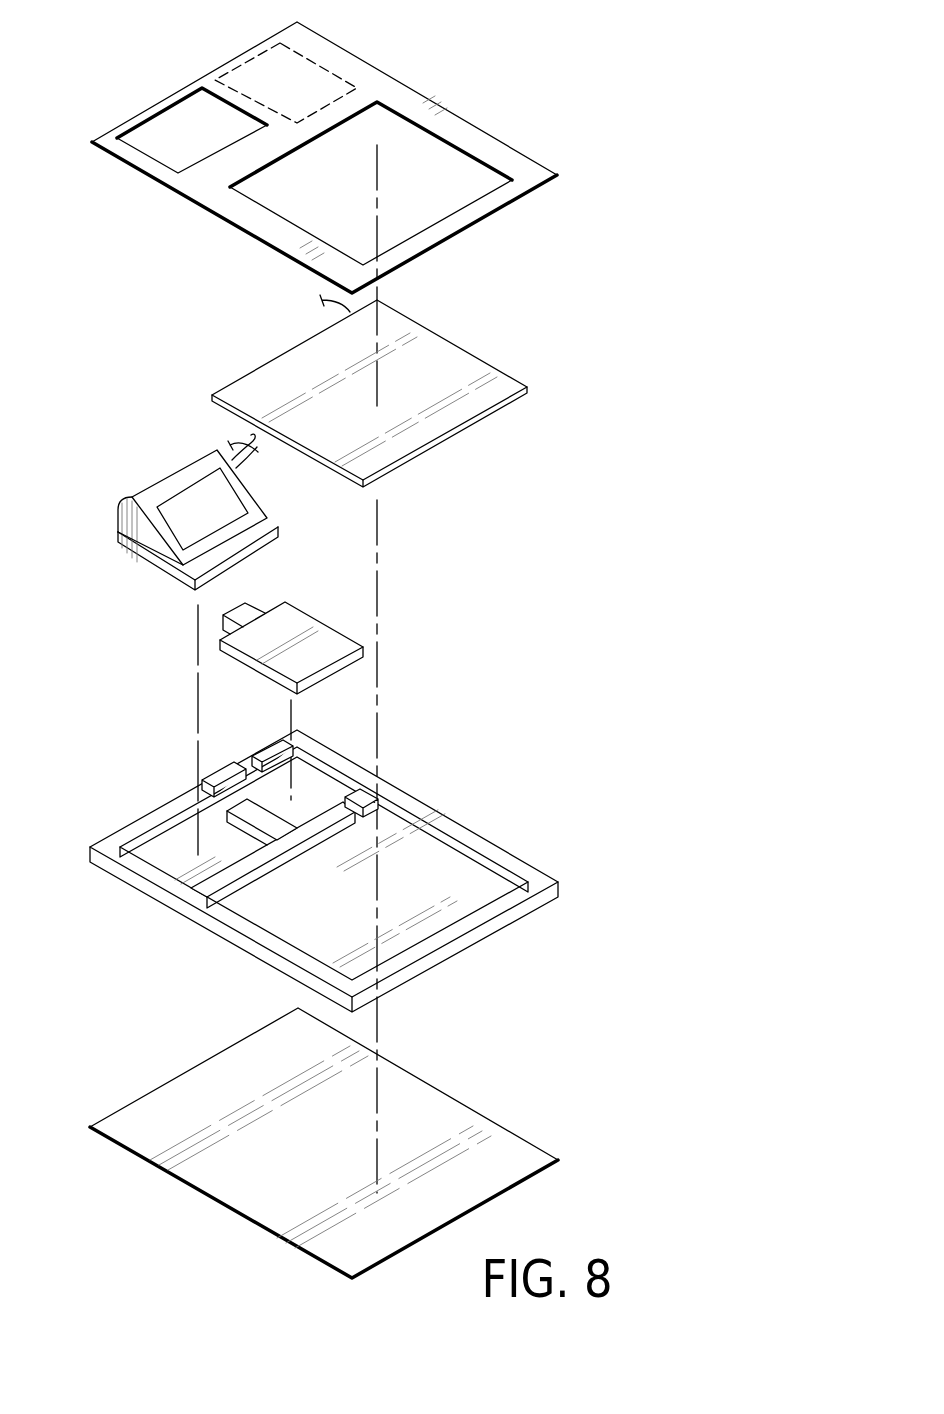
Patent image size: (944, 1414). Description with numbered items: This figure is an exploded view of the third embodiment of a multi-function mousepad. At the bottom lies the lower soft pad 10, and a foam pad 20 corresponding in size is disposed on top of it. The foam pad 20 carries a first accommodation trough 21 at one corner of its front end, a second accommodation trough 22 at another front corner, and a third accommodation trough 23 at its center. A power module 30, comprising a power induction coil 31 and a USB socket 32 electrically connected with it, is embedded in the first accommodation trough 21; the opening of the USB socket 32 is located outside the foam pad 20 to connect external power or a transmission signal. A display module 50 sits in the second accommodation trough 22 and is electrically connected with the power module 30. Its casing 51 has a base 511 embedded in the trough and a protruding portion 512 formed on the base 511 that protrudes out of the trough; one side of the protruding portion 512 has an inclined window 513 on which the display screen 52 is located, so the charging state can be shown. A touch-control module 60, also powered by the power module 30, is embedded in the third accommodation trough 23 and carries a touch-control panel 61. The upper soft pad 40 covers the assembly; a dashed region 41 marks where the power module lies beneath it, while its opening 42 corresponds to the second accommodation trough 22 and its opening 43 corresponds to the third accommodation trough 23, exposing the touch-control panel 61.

The lower soft pad 10 is at (510, 1127).
The foam pad 20 is at (312, 856).
The first accommodation trough 21 is at (320, 790).
The second accommodation trough 22 is at (157, 848).
The third accommodation trough 23 is at (287, 902).
The power module 30 is at (278, 666).
The power induction coil 31 is at (323, 633).
The USB socket 32 is at (223, 622).
The upper soft pad 40 is at (523, 147).
The hidden region 41 is at (248, 62).
The opening 42 is at (162, 141).
The opening 43 is at (423, 197).
The display module 50 is at (189, 498).
The casing 51 is at (153, 498).
The base 511 is at (168, 577).
The protruding portion 512 is at (145, 498).
The inclined window 513 is at (187, 485).
The display screen 52 is at (225, 497).
The touch-control module 60 is at (488, 355).
The touch-control panel 61 is at (448, 415).